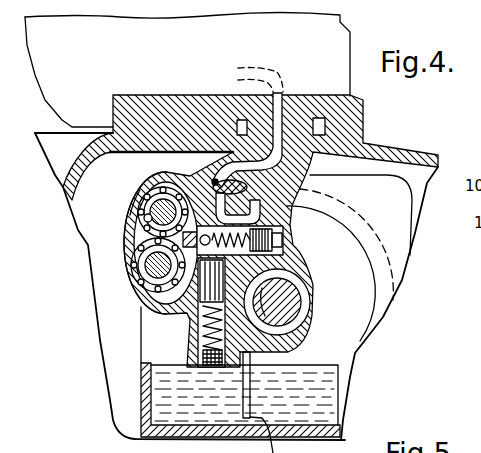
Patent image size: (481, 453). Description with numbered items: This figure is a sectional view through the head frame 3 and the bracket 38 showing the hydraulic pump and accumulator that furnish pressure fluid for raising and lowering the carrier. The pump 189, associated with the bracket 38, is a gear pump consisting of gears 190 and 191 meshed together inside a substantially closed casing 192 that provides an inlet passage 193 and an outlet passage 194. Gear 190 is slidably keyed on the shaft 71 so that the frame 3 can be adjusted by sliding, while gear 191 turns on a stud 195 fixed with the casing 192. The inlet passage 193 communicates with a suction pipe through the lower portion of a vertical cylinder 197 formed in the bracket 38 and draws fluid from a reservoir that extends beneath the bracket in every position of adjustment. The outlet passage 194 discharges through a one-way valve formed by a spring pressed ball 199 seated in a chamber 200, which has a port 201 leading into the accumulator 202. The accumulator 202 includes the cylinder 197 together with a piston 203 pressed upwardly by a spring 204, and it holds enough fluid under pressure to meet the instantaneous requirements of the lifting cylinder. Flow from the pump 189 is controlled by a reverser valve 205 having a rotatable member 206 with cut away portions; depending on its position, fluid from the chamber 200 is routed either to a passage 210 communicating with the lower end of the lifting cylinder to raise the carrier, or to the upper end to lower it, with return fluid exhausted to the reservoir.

The head frame 3 is at (352, 33).
The bracket 38 is at (318, 104).
The shaft 71 is at (143, 218).
The pump 189 is at (125, 235).
The gear 190 is at (146, 208).
The gear 191 is at (138, 263).
The casing 192 is at (136, 288).
The inlet passage 193 is at (148, 307).
The outlet passage 194 is at (200, 188).
The stud 195 is at (136, 257).
The vertical cylinder 197 is at (267, 402).
The spring pressed ball 199 is at (277, 273).
The chamber 200 is at (275, 226).
The port 201 is at (205, 300).
The accumulator 202 is at (249, 351).
The piston 203 is at (225, 313).
The spring 204 is at (203, 343).
The reverser valve 205 is at (213, 180).
The rotatable member 206 is at (290, 179).
The passage 210 is at (287, 93).